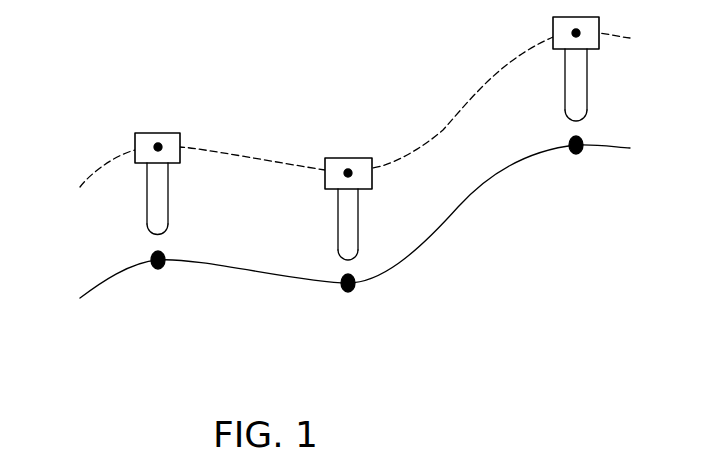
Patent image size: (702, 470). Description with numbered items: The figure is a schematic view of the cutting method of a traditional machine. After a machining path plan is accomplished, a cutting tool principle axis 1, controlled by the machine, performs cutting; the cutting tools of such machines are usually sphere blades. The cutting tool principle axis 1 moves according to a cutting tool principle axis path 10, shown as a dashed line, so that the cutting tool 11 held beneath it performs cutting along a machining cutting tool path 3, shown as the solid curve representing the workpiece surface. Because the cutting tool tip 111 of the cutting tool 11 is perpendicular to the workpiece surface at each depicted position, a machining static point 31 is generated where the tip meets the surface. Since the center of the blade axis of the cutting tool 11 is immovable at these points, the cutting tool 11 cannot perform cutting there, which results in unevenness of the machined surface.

The cutting tool principle axis 1 is at (308, 138).
The cutting tool principle axis path 10 is at (93, 173).
The cutting tool 11 is at (302, 154).
The cutting tool tip 111 is at (157, 133).
The machining cutting tool path 3 is at (107, 278).
The machining static point 31 is at (155, 270).